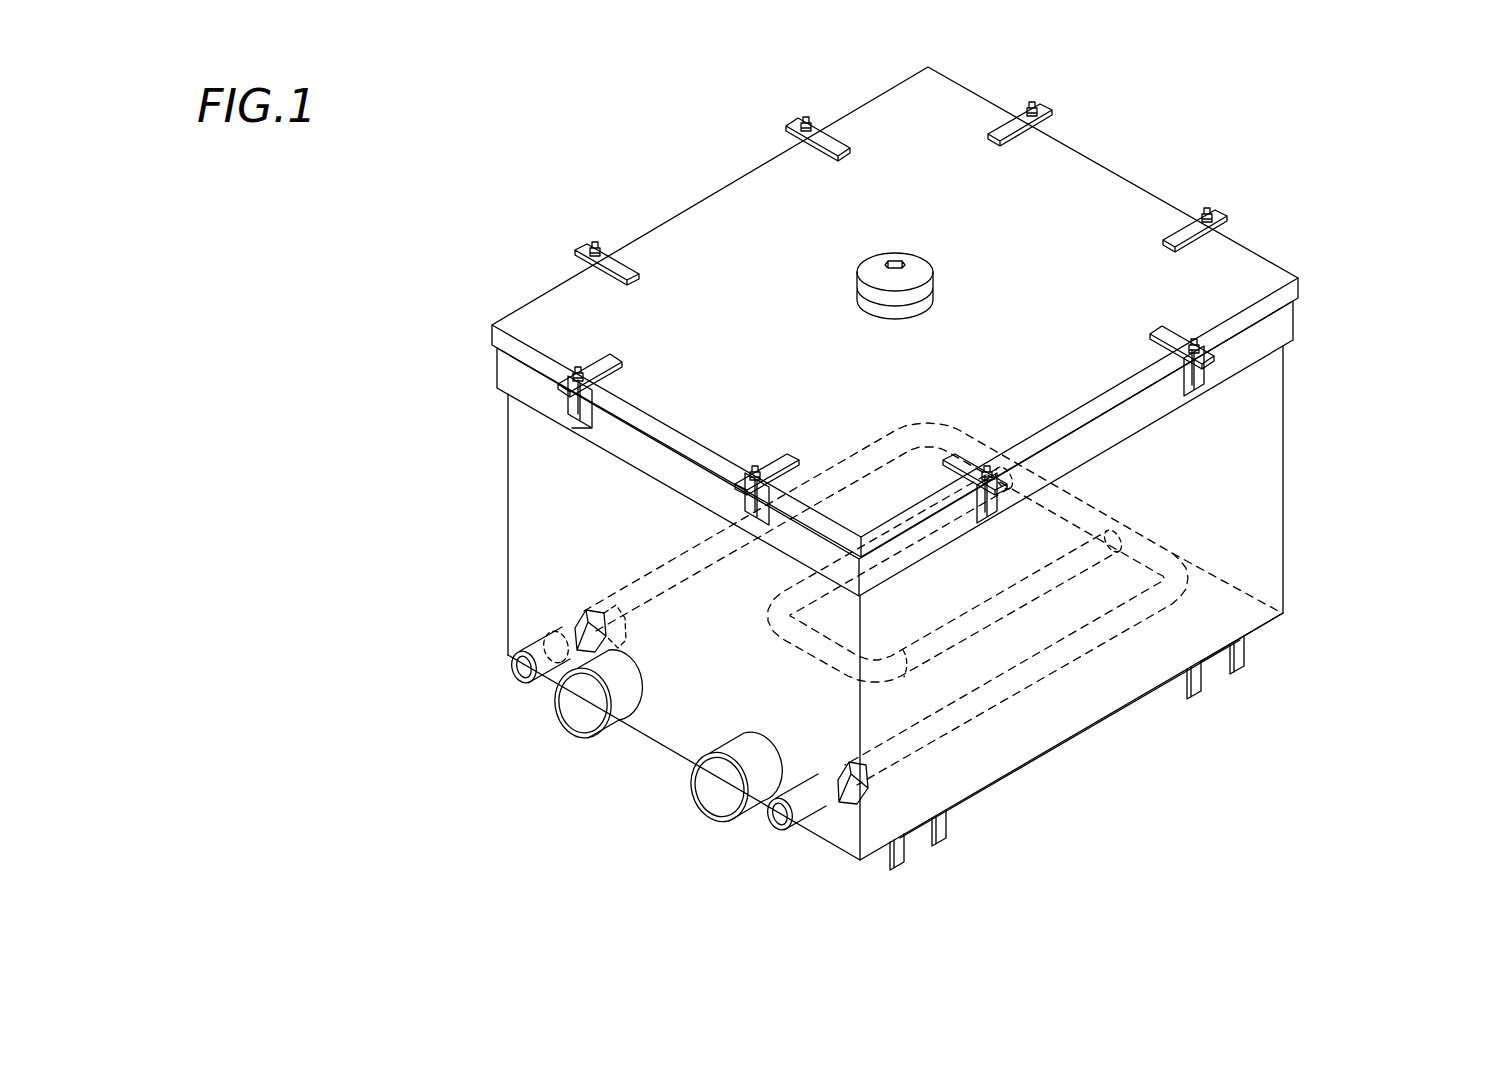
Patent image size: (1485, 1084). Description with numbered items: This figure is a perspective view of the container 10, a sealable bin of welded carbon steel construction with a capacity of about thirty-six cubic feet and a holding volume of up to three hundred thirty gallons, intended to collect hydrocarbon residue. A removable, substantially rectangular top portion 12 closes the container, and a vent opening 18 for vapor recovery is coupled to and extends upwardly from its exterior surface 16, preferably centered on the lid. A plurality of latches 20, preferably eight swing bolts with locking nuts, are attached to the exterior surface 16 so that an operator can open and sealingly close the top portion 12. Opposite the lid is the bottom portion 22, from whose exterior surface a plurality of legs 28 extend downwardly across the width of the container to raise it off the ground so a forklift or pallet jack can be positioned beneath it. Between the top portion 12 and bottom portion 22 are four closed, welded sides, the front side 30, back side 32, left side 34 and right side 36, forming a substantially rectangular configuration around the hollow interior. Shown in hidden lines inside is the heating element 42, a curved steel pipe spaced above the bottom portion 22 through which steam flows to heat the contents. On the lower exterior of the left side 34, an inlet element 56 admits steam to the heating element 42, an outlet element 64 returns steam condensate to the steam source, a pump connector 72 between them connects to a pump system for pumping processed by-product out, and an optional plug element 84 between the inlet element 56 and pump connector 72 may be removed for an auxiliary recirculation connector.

The container 10 is at (1316, 130).
The top portion 12 is at (1262, 311).
The exterior surface 16 is at (933, 102).
The vent opening 18 is at (912, 306).
The latches 20 is at (790, 125).
The bottom portion 22 is at (1262, 632).
The legs 28 is at (1201, 690).
The front side 30 is at (1013, 750).
The back side 32 is at (555, 451).
The left side 34 is at (555, 503).
The right side 36 is at (1232, 418).
The heating element 42 is at (1120, 527).
The inlet element 56 is at (515, 676).
The outlet element 64 is at (777, 820).
The pump connector 72 is at (723, 793).
The plug element 84 is at (574, 713).